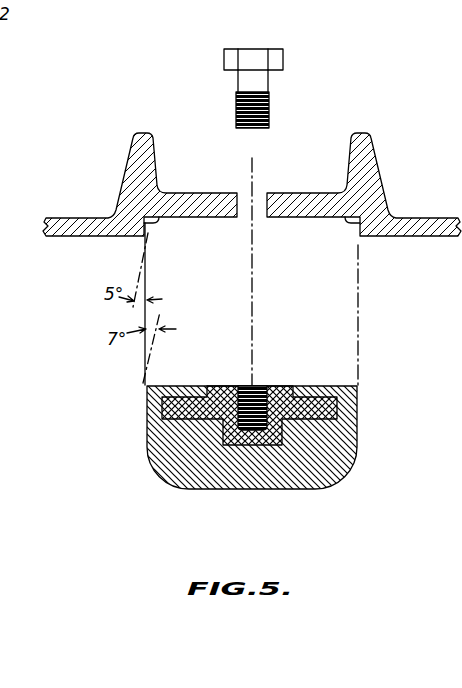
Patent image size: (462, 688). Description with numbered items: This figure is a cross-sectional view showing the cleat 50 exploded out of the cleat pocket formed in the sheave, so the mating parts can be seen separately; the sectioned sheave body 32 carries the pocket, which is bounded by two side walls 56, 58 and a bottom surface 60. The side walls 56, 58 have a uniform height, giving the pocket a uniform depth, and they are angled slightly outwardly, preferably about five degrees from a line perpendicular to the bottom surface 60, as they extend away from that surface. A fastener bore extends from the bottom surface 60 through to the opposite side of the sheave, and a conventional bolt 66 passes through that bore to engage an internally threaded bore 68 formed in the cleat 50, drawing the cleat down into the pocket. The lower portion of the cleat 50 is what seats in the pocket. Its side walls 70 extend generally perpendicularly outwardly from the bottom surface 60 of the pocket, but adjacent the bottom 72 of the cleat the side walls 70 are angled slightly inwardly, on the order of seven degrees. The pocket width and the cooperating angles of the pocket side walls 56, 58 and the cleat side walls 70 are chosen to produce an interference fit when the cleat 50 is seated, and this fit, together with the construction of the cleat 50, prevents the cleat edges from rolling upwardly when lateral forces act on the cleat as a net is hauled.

The housing 32 is at (128, 164).
The cleat 50 is at (173, 488).
The side wall 56 is at (349, 223).
The side wall 58 is at (146, 223).
The bottom surface 60 is at (277, 218).
The bolt 66 is at (232, 57).
The internally threaded bore 68 is at (248, 385).
The side wall of the cleat 70 is at (147, 422).
The bottom of the cleat 72 is at (388, 315).